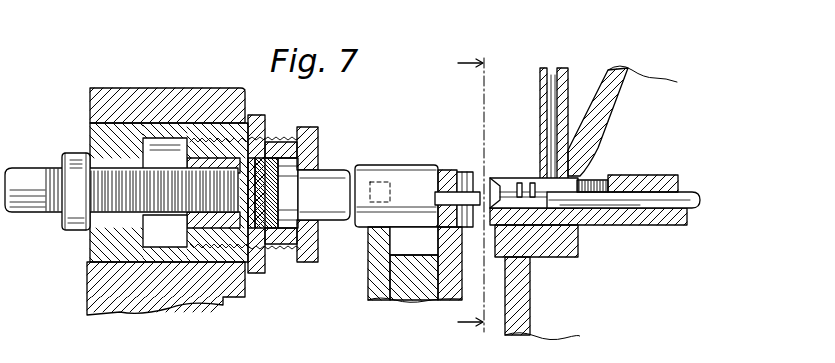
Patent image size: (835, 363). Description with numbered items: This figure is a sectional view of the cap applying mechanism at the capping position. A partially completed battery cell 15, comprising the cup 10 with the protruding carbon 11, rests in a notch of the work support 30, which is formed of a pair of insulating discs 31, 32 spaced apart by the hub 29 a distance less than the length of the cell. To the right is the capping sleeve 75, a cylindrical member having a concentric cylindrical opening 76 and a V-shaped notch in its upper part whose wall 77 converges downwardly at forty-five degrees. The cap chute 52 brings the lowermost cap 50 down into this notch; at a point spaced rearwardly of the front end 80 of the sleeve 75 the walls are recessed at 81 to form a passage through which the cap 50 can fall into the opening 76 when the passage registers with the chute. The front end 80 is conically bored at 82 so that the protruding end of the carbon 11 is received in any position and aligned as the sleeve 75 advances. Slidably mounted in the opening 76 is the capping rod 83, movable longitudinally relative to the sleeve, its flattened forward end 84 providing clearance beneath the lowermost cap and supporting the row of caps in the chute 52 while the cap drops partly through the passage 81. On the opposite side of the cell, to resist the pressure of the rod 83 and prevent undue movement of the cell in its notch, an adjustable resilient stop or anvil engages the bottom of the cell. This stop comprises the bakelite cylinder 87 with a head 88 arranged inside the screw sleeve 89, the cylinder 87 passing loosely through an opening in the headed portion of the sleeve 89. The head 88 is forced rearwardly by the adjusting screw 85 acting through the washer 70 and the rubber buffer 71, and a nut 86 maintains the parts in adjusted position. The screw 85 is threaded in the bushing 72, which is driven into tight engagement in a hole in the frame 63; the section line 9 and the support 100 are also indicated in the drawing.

The frame 63 is at (92, 276).
The washer 70 is at (258, 232).
The rubber buffer 71 is at (262, 217).
The adjusting screw 85 is at (47, 168).
The nut 86 is at (72, 227).
The bushing 72 is at (257, 116).
The screw sleeve 89 is at (318, 131).
The head 88 is at (318, 153).
The cylinder 87 is at (324, 195).
The battery cell 15 is at (401, 168).
The cup 10 is at (448, 170).
The carbon 11 is at (467, 172).
The insulating disc 31 is at (369, 279).
The work support 30 is at (414, 241).
The hub 29 is at (412, 301).
The insulating disc 32 is at (462, 281).
The section line 9 is at (471, 193).
The chute 52 is at (542, 96).
The cap 50 is at (563, 133).
The opening 76 is at (548, 228).
The support leg 100 is at (531, 313).
The conical bore 82 is at (490, 190).
The front end 80 is at (509, 182).
The recess 81 is at (528, 184).
The capping rod 83 is at (697, 192).
The forward end 84 is at (597, 200).
The wall 77 is at (608, 179).
The sleeve 75 is at (646, 175).